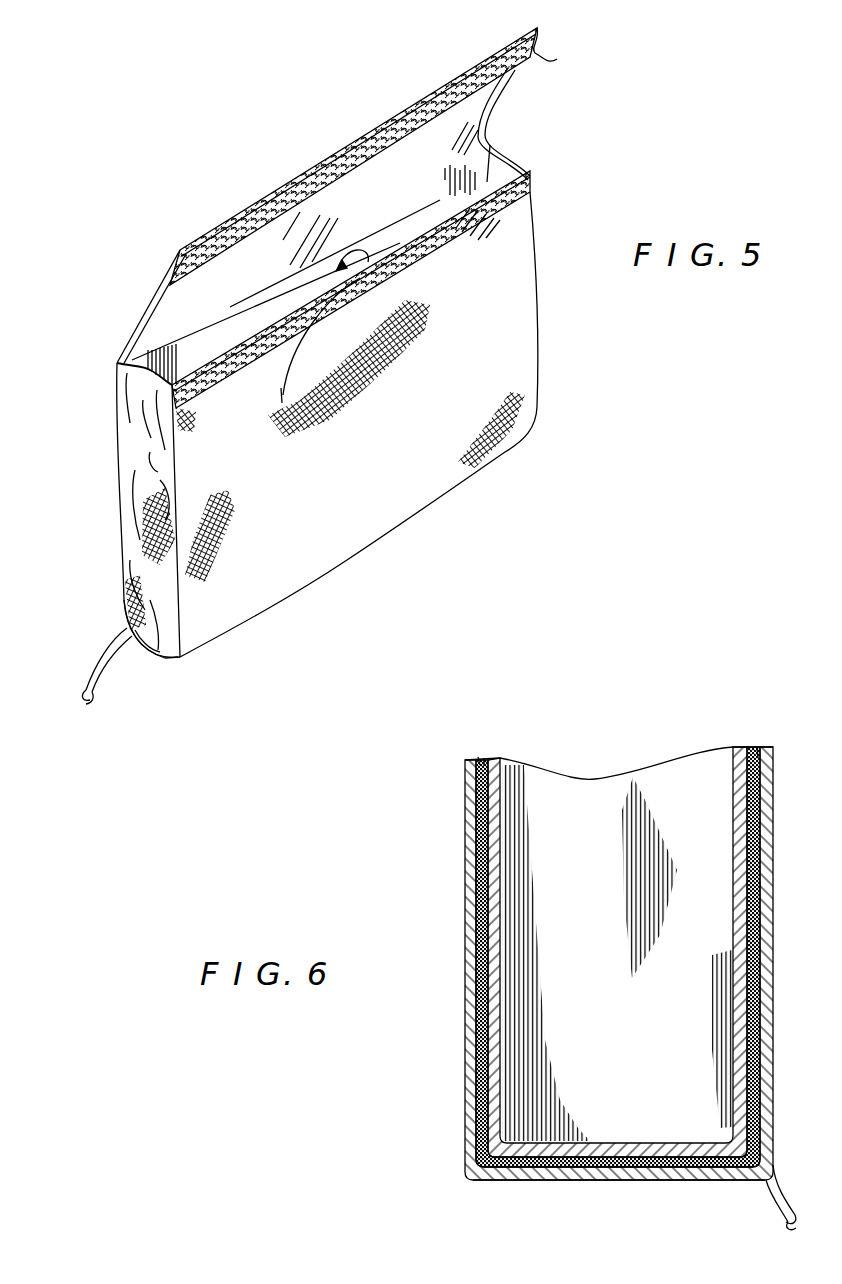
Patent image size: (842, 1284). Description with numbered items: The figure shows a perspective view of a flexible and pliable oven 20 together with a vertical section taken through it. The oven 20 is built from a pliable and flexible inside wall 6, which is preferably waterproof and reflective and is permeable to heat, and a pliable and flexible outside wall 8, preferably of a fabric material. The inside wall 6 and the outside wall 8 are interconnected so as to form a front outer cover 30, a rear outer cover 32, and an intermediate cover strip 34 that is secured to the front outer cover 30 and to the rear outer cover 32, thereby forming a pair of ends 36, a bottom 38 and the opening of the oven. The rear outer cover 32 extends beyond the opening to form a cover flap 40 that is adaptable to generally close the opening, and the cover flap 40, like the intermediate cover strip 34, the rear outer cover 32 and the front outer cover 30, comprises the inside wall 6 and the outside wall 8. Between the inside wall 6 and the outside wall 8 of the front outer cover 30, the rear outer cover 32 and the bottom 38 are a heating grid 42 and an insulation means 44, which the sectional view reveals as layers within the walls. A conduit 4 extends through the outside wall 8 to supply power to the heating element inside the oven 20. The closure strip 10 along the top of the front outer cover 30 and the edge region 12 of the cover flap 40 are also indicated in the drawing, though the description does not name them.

In FIG. 5, the conduit 4 is at (103, 640).
In FIG. 5, the inside wall 6 is at (207, 252).
In FIG. 6, the inside wall 6 is at (733, 938).
In FIG. 5, the outside wall 8 is at (158, 287).
In FIG. 6, the outside wall 8 is at (465, 806).
In FIG. 5, the front closure strip 10 is at (462, 232).
In FIG. 5, the flap edge 12 is at (557, 59).
In FIG. 5, the oven 20 is at (540, 270).
In FIG. 5, the front outer cover 30 is at (510, 343).
In FIG. 6, the front outer cover 30 is at (772, 803).
In FIG. 5, the rear outer cover 32 is at (157, 497).
In FIG. 6, the rear outer cover 32 is at (467, 862).
In FIG. 5, the intermediate cover strip 34 is at (157, 657).
In FIG. 5, the ends 36 is at (522, 355).
In FIG. 5, the bottom 38 is at (327, 545).
In FIG. 6, the bottom 38 is at (623, 1180).
In FIG. 5, the cover flap 40 is at (390, 122).
In FIG. 6, the heating grid 42 is at (489, 750).
In FIG. 6, the insulation means 44 is at (480, 760).